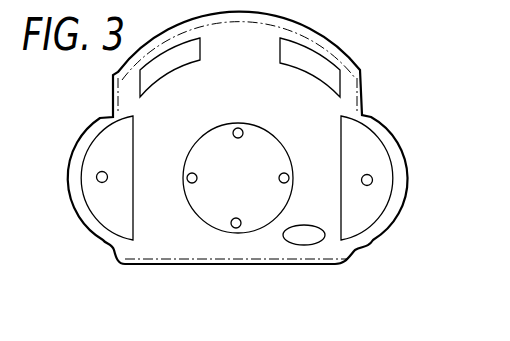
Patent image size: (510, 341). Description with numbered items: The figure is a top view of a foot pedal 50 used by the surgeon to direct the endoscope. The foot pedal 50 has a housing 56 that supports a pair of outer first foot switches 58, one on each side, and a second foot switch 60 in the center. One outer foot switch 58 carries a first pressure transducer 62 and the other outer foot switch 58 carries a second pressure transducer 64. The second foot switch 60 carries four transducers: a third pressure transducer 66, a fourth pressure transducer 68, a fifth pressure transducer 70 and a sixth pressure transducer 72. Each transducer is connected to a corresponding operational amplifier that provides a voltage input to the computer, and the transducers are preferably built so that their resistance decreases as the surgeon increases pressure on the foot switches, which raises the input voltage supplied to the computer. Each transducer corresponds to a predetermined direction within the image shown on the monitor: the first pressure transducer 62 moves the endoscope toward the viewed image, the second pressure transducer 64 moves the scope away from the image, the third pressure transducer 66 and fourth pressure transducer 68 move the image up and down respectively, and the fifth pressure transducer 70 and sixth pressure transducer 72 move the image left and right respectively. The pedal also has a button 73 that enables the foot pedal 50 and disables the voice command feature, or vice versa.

The foot pedal 50 is at (364, 60).
The housing 56 is at (152, 235).
The outer first foot switches 58 is at (97, 147).
The second foot switch 60 is at (213, 208).
The first pressure transducer 62 is at (366, 168).
The second pressure transducer 64 is at (97, 177).
The third pressure transducer 66 is at (242, 130).
The fourth pressure transducer 68 is at (236, 230).
The fifth pressure transducer 70 is at (186, 172).
The sixth pressure transducer 72 is at (290, 172).
The button 73 is at (308, 242).